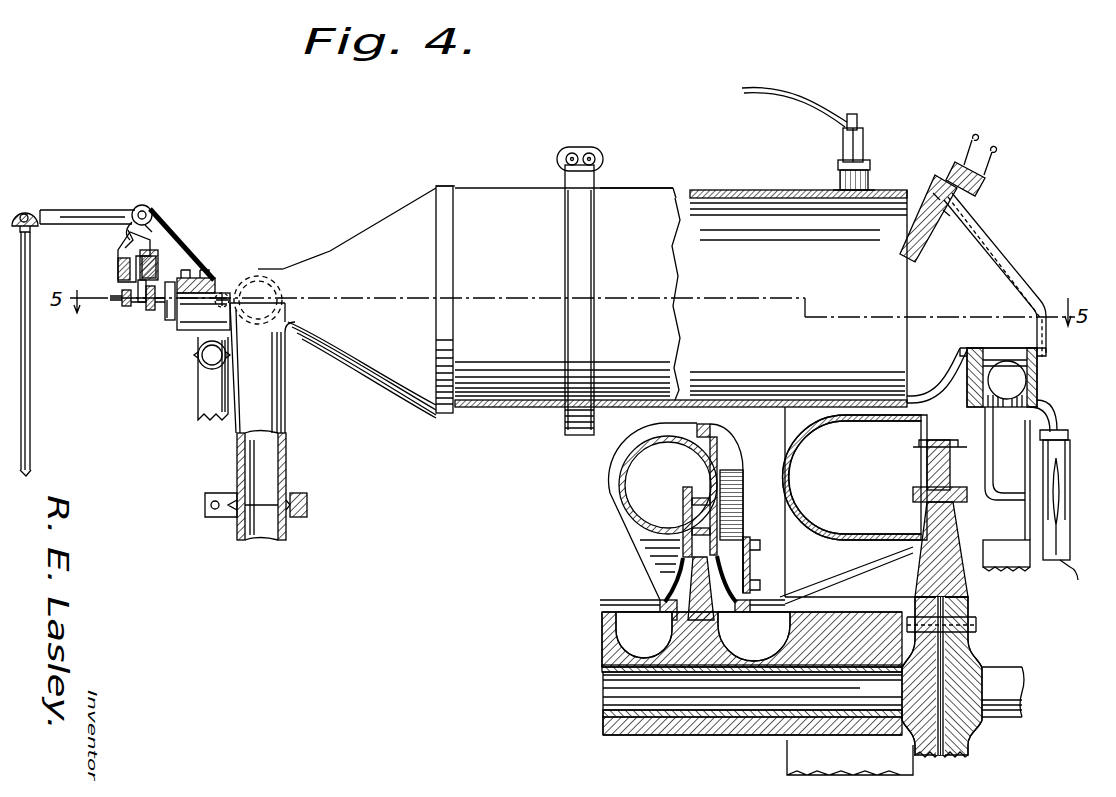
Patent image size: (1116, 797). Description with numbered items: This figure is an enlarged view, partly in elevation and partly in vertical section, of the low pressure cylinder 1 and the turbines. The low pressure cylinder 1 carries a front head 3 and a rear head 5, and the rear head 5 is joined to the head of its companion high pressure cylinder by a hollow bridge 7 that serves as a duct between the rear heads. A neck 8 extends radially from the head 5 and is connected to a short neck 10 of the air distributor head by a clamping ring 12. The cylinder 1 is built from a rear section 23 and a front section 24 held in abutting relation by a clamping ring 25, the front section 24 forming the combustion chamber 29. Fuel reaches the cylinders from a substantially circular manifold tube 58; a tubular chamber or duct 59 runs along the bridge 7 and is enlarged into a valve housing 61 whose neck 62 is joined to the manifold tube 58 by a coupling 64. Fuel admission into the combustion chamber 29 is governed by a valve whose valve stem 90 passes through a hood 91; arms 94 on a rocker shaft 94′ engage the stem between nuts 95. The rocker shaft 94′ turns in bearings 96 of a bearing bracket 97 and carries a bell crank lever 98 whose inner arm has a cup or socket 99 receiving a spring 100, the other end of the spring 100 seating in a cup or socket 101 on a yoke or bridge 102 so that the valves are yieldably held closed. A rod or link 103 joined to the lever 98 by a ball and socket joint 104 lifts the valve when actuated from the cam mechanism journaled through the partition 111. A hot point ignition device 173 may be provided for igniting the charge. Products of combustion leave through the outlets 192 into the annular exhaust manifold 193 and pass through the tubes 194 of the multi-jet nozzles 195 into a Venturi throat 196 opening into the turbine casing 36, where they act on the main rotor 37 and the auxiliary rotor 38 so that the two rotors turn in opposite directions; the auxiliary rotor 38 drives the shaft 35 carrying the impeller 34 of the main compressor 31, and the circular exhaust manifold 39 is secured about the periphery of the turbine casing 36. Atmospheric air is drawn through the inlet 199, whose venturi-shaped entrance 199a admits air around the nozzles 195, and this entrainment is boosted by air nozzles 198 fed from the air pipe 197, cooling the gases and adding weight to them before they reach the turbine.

The low pressure cylinder 1 is at (706, 190).
The head 3 is at (955, 247).
The head 5 is at (398, 355).
The hollow bridge 7 is at (281, 268).
The neck 8 is at (268, 410).
The short neck 10 is at (272, 530).
The clamping ring 12 is at (305, 498).
The rear section 23 is at (484, 196).
The front section 24 is at (633, 193).
The clamping ring 25 is at (562, 260).
The combustion chamber 29 is at (790, 263).
The main compressor 31 is at (612, 480).
The impeller 34 is at (660, 620).
The shaft 35 is at (630, 688).
The turbine housing 36 is at (922, 492).
The main rotor 37 is at (958, 596).
The auxiliary rotor 38 is at (958, 576).
The circular exhaust manifold 39 is at (830, 444).
The manifold tube 58 is at (198, 385).
The tubular chamber 59 is at (257, 276).
The valve housing 61 is at (235, 322).
The neck 62 is at (205, 330).
The coupling 64 is at (210, 362).
The valve stem 90 is at (118, 305).
The hood 91 is at (160, 305).
The arms 94 is at (150, 283).
The rocker shaft 94′ is at (152, 208).
The nuts 95 is at (132, 305).
The bearings 96 is at (138, 205).
The bearing bracket 97 is at (196, 280).
The lever 98 is at (68, 209).
The cup or socket 99 is at (152, 270).
The spring 100 is at (120, 269).
The cup or socket 101 is at (118, 262).
The yoke or bridge 102 is at (122, 247).
The rod or link 103 is at (34, 420).
The ball and socket joint 104 is at (20, 205).
The partition 111 is at (846, 148).
The hot point ignition device 173 is at (962, 198).
The outlets 192 is at (1035, 352).
The annular exhaust manifold 193 is at (1020, 366).
The tube 194 is at (1008, 381).
The multi-jet nozzles 195 is at (1030, 396).
The Venturi throat 196 is at (1006, 495).
The air pipe 197 is at (1069, 577).
The air nozzles 198 is at (1060, 492).
The inlet 199 is at (1058, 412).
The entrance 199a is at (985, 445).